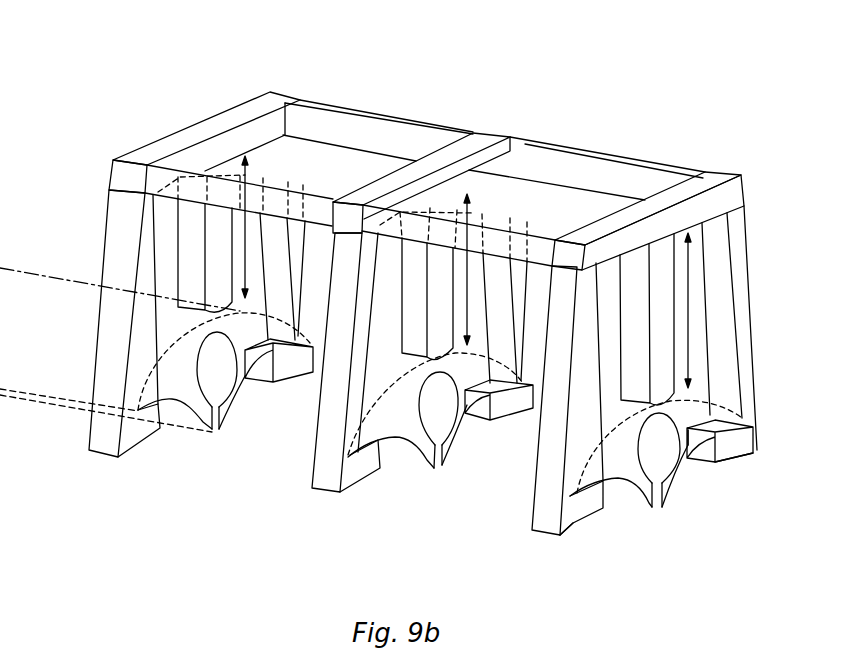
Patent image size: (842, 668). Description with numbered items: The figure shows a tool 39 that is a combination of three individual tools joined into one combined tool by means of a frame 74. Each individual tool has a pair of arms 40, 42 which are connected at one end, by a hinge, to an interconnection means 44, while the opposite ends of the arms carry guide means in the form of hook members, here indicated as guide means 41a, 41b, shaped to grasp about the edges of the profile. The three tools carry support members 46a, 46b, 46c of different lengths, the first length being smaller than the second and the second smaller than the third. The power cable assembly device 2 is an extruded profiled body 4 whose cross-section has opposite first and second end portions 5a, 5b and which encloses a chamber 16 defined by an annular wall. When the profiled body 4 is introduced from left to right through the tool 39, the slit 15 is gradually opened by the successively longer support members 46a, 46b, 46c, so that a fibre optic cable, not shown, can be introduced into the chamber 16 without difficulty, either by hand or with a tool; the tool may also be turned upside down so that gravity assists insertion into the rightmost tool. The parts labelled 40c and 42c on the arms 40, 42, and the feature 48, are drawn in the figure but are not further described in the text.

The tool 39 is at (406, 293).
The interconnection means 44 is at (209, 118).
The frame 74 is at (397, 115).
The arm 42 is at (303, 160).
The strut block 42c is at (273, 163).
The support member 46a is at (233, 160).
The support member 46b is at (452, 202).
The support member 46c is at (667, 273).
The arm 40 is at (110, 340).
The hook plate 40c is at (165, 238).
The first end portion 5a is at (138, 410).
The second end portion 5b is at (307, 343).
The chamber 16 is at (228, 381).
The slit 15 is at (216, 431).
The foot portion 41a is at (585, 512).
The foot portion 41b is at (737, 458).
The edge 48 is at (718, 418).
The power cable assembly device 2 is at (27, 277).
The profiled body 4 is at (67, 290).